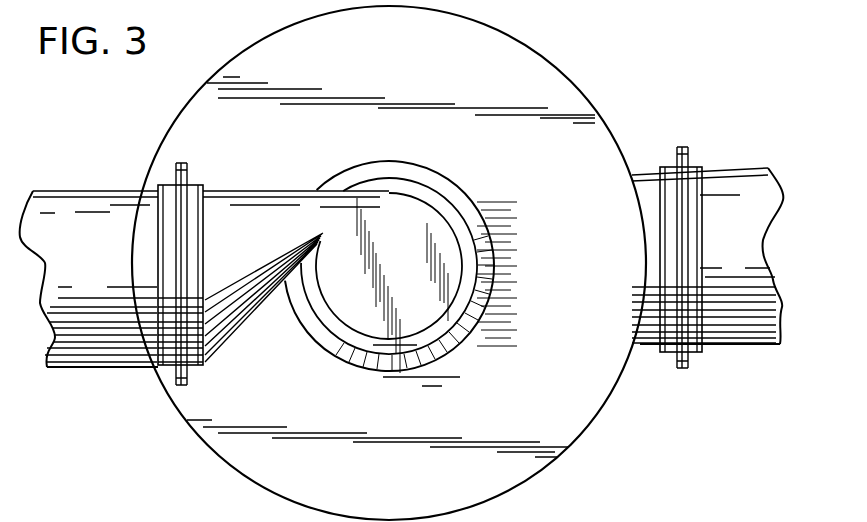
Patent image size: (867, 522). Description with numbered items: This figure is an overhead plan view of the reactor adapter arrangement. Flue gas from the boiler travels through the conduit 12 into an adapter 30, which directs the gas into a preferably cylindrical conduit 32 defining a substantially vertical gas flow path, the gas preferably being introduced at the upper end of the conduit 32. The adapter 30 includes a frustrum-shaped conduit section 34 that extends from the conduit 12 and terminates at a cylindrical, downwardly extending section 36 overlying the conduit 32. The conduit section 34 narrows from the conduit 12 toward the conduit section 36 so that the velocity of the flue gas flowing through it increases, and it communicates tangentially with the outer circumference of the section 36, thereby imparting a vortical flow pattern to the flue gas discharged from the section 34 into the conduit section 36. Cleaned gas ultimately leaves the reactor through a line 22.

The conduit 12 is at (85, 234).
The line 22 is at (727, 182).
The adapter 30 is at (377, 251).
The cylindrical conduit 32 is at (436, 336).
The frustrum-shaped conduit section 34 is at (240, 290).
The cylindrical downwardly extending section 36 is at (442, 262).